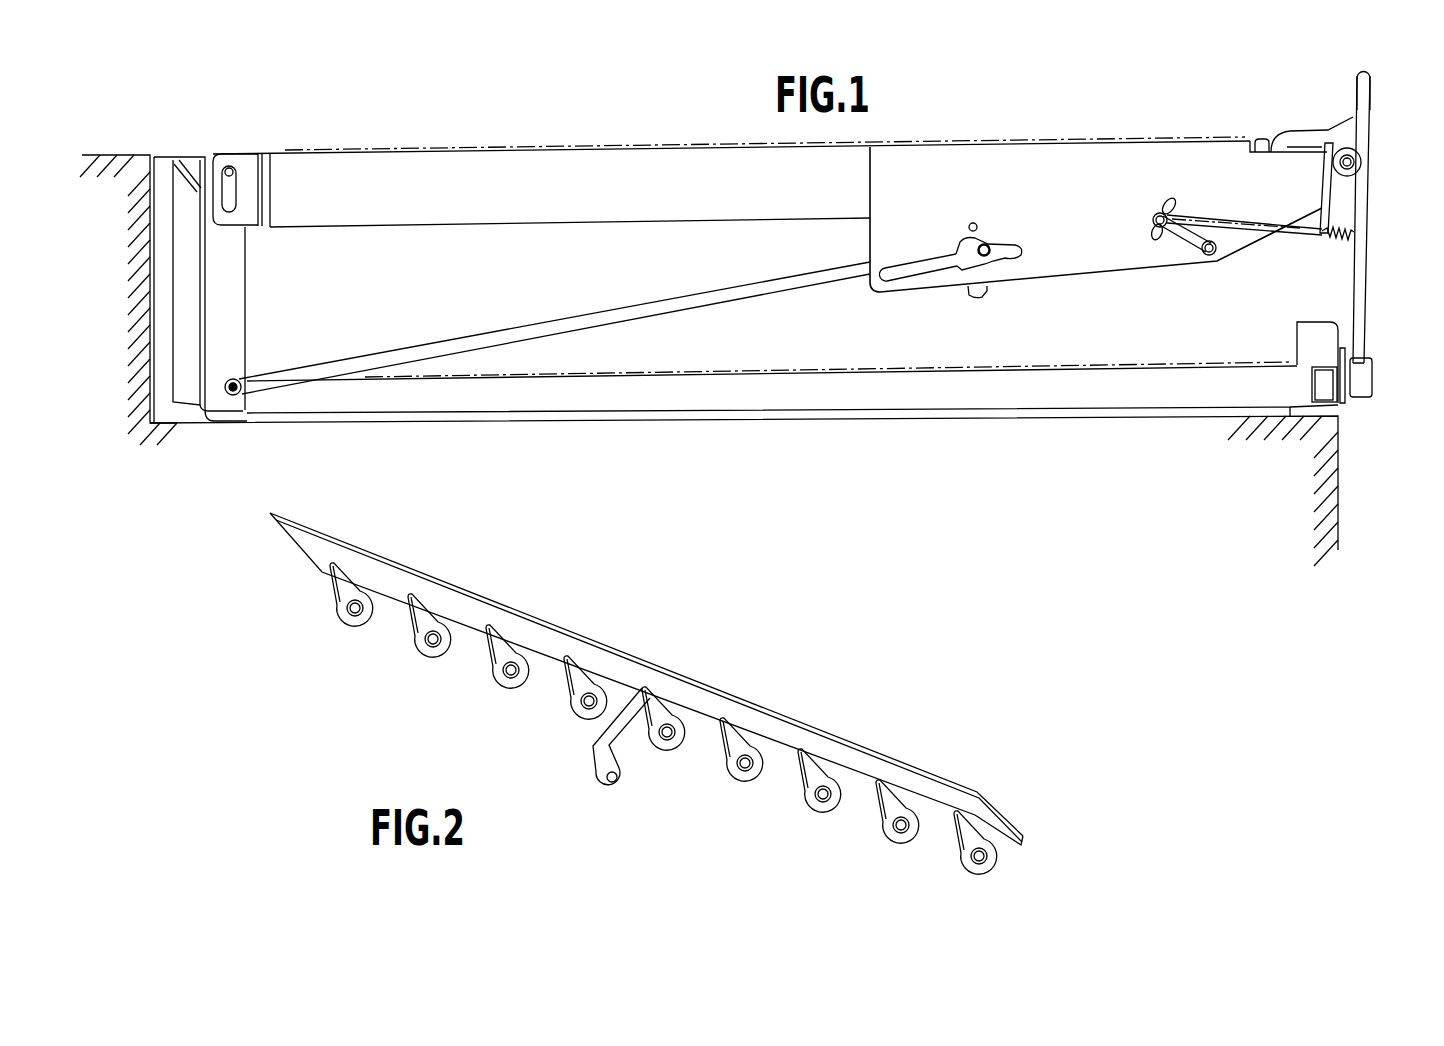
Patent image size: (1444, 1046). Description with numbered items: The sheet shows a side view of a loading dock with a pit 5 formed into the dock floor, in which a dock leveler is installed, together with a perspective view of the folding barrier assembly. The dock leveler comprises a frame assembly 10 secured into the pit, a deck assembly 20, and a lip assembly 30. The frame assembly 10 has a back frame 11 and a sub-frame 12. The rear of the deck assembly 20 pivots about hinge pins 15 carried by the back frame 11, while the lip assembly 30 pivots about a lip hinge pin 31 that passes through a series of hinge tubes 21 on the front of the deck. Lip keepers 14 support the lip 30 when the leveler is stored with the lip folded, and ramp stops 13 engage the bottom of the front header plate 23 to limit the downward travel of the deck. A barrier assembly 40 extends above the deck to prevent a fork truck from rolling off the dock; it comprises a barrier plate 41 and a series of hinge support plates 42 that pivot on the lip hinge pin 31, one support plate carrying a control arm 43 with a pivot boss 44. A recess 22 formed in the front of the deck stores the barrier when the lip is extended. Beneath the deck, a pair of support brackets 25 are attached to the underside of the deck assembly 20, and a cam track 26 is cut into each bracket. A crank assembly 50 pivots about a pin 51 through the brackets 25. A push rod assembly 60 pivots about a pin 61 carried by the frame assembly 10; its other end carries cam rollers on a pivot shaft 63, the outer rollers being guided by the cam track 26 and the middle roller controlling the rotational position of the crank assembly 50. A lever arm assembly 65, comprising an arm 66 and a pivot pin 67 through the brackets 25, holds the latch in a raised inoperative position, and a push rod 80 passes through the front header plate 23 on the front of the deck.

In FIG. 1, the pit 5 is at (148, 310).
In FIG. 1, the frame assembly 10 is at (792, 374).
In FIG. 1, the back frame 11 is at (245, 311).
In FIG. 1, the sub-frame 12 is at (757, 359).
In FIG. 1, the ramp stops 13 is at (1312, 332).
In FIG. 1, the lip keepers 14 is at (1373, 378).
In FIG. 1, the hinge pins 15 is at (229, 168).
In FIG. 1, the deck assembly 20 is at (634, 149).
In FIG. 1, the hinge tubes 21 is at (1363, 184).
In FIG. 1, the recess 22 is at (1258, 148).
In FIG. 1, the front header plate 23 is at (1320, 194).
In FIG. 1, the support brackets 25 is at (1078, 276).
In FIG. 1, the cam track 26 is at (924, 292).
In FIG. 1, the lip assembly 30 is at (1392, 200).
In FIG. 1, the lip hinge pin 31 is at (1356, 163).
In FIG. 1, the barrier assembly 40 is at (1393, 73).
In FIG. 1, the barrier plate 41 is at (1373, 100).
In FIG. 2, the barrier plate 41 is at (1003, 813).
In FIG. 2, the hinge support plates 42 is at (995, 868).
In FIG. 1, the control arm 43 is at (1344, 134).
In FIG. 2, the control arm 43 is at (626, 733).
In FIG. 2, the pivot boss 44 is at (607, 790).
In FIG. 1, the crank assembly 50 is at (993, 262).
In FIG. 1, the pin 51 is at (973, 222).
In FIG. 1, the push rod assembly 60 is at (573, 314).
In FIG. 1, the pin 61 is at (240, 394).
In FIG. 1, the pivot shaft 63 is at (988, 243).
In FIG. 1, the lever arm assembly 65 is at (1146, 251).
In FIG. 1, the arm 66 is at (1176, 244).
In FIG. 1, the pivot pin 67 is at (1207, 256).
In FIG. 1, the push rod 80 is at (1286, 236).